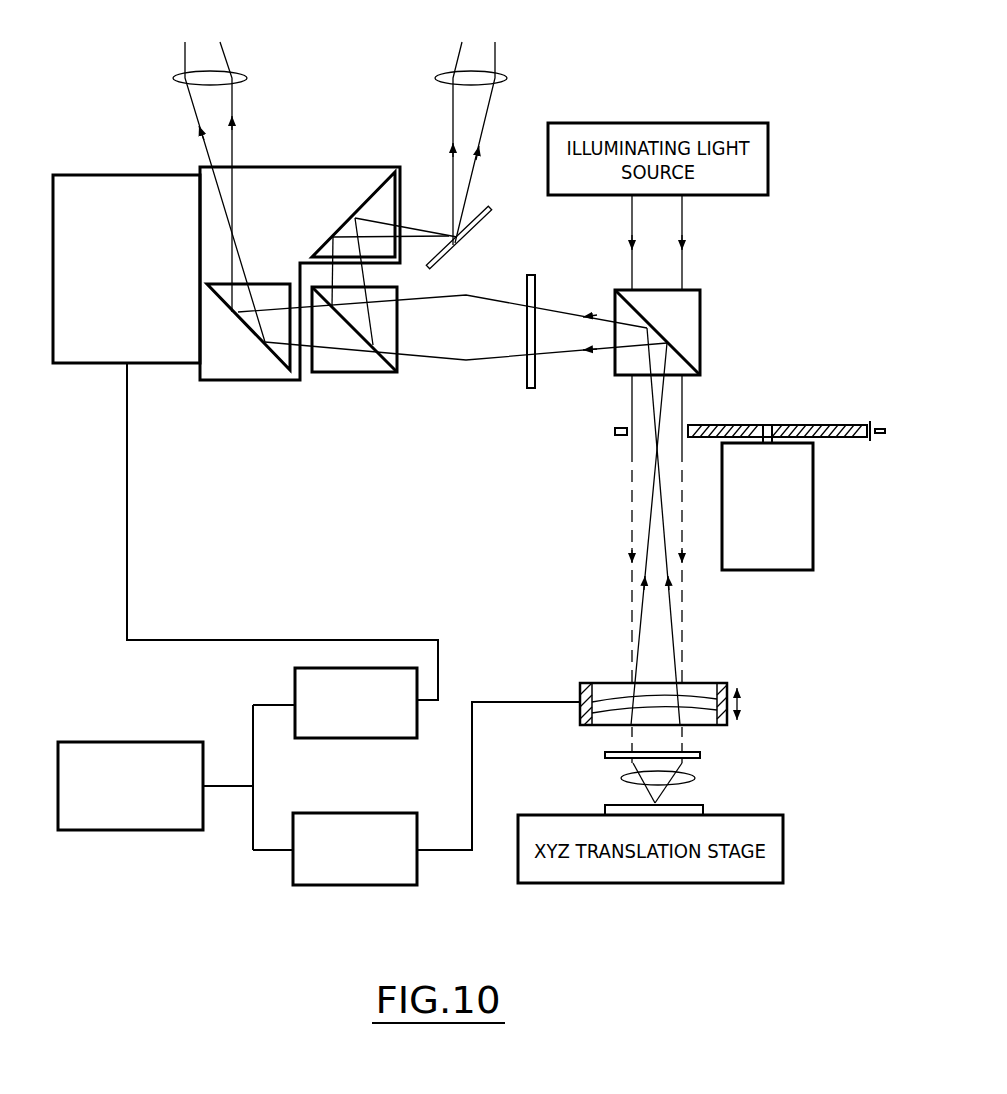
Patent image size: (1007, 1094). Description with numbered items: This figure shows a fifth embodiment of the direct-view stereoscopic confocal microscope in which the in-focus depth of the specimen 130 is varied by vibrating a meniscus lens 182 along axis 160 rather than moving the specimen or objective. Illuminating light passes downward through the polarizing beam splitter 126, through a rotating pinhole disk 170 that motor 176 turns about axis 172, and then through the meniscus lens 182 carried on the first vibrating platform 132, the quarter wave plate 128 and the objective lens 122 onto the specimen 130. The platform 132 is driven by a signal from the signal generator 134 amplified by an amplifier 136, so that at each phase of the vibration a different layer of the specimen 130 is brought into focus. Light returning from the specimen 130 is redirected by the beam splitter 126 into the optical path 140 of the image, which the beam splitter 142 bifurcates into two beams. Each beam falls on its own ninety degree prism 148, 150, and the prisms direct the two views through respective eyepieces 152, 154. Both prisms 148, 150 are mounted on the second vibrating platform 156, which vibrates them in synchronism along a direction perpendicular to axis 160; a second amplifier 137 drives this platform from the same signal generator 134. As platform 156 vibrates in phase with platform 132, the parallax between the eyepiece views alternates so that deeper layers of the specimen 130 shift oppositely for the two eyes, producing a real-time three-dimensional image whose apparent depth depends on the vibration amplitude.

The objective lens 122 is at (697, 780).
The polarizing beam splitter 126 is at (703, 332).
The quarter wave plate 128 is at (702, 750).
The specimen 130 is at (605, 805).
The first vibrating platform 132 is at (582, 683).
The signal generator 134 is at (163, 832).
The amplifier 136 is at (393, 887).
The amplifier 137 is at (295, 680).
The optical path 140 is at (553, 350).
The beam splitter 142 is at (357, 365).
The 90 degree prism 148 is at (267, 350).
The 90 degree prism 150 is at (378, 212).
The eyepiece 152 is at (243, 73).
The eyepiece 154 is at (502, 73).
The second vibrating platform 156 is at (103, 365).
The axis 160 is at (740, 698).
The disk 170 is at (817, 425).
The axis 172 is at (768, 425).
The motor 176 is at (815, 507).
The meniscus lens 182 is at (693, 697).